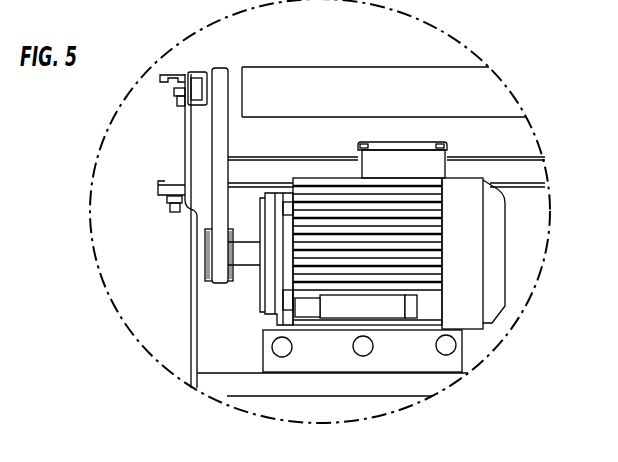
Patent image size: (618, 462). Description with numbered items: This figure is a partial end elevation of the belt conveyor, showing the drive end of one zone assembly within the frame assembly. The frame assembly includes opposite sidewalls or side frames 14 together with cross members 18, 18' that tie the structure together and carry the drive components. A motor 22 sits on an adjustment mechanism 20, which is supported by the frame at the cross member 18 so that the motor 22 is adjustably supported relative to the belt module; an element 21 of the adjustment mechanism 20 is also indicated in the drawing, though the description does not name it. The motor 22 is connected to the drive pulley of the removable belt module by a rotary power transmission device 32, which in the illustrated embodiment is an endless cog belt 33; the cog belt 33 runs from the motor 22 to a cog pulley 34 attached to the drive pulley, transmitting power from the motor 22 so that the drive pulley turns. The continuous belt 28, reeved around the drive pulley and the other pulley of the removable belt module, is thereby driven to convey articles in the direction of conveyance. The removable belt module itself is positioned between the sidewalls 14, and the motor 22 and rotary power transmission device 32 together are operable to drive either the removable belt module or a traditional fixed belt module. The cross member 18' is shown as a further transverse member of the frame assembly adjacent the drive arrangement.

The sidewall 14 is at (183, 147).
The cross member 18 is at (312, 399).
The cross member 18' is at (397, 138).
The adjustment mechanism 20 is at (432, 373).
The bolt hole 21 is at (373, 347).
The motor 22 is at (506, 284).
The continuous belt 28 is at (318, 67).
The rotary power transmission device 32 is at (211, 125).
The cog belt 33 is at (212, 217).
The cog pulley 34 is at (207, 71).